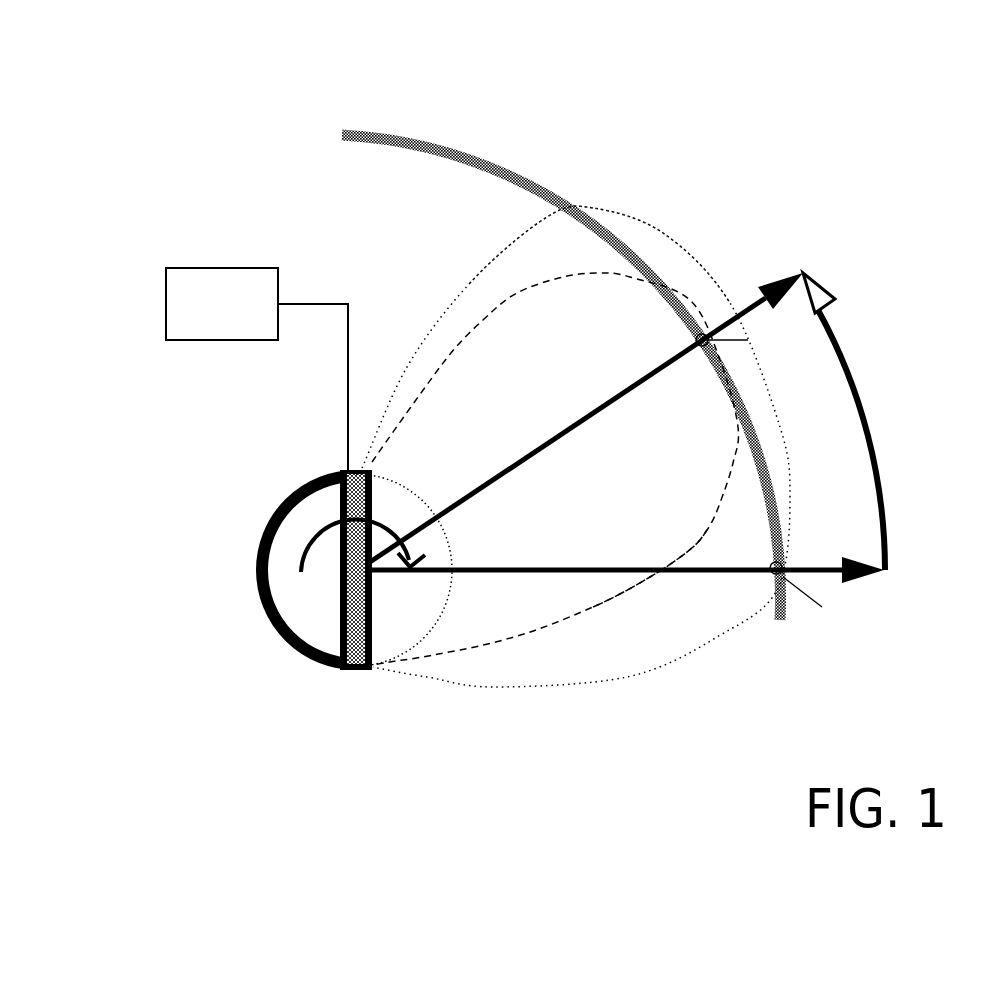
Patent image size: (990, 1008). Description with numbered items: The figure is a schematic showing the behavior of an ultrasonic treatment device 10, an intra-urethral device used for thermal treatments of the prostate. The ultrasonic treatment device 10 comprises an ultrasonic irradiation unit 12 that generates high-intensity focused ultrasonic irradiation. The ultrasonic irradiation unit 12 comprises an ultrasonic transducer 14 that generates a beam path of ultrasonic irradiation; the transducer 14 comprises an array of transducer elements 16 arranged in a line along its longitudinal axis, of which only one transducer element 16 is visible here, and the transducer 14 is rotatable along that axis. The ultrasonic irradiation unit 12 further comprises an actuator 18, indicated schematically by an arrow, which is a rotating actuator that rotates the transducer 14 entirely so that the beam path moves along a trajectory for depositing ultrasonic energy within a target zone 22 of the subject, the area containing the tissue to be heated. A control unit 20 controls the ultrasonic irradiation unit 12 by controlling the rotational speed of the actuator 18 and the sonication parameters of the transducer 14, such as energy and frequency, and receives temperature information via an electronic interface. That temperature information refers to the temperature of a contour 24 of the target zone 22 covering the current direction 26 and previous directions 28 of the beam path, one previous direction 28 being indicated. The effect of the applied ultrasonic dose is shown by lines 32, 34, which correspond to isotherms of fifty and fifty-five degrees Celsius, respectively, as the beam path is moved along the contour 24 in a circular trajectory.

The ultrasonic treatment device 10 is at (227, 188).
The ultrasonic irradiation unit 12 is at (255, 584).
The ultrasonic transducer 14 is at (337, 615).
The transducer element 16 is at (363, 635).
The actuator 18 is at (307, 532).
The control unit 20 is at (217, 310).
The target zone 22 is at (413, 167).
The contour 24 is at (490, 165).
The current direction 26 is at (683, 575).
The previous direction 28 is at (735, 315).
The line 32 is at (593, 207).
The line 34 is at (613, 277).